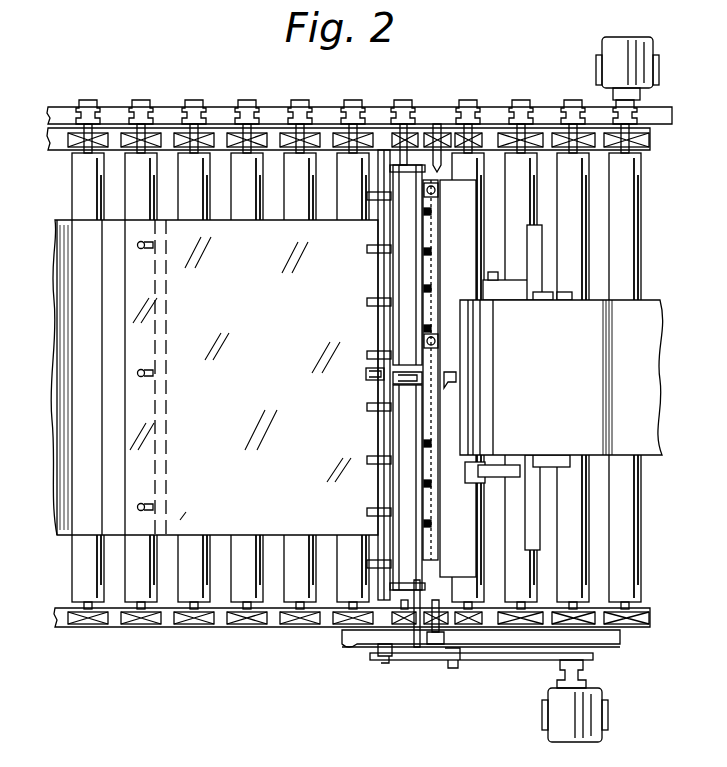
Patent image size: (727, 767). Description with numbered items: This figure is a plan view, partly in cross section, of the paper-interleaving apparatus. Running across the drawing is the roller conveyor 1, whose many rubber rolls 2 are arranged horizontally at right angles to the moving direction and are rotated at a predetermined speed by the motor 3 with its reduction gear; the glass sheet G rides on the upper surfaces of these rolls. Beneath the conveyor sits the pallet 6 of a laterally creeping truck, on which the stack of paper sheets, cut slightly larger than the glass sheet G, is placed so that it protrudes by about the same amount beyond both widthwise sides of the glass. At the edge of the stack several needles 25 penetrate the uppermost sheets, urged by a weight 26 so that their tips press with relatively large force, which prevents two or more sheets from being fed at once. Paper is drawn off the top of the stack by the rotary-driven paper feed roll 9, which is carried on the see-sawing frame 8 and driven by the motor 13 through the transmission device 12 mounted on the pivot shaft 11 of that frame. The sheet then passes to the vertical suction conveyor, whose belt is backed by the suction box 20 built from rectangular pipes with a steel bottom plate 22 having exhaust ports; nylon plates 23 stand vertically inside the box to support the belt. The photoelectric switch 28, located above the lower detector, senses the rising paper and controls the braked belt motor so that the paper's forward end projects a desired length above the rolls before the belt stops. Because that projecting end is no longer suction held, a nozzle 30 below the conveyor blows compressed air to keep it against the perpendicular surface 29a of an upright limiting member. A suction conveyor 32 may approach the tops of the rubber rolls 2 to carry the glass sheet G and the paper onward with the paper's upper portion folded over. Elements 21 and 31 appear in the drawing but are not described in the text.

The roller conveyor 1 is at (270, 107).
The rubber rolls 2 is at (242, 205).
The motor 3 is at (612, 49).
The pallet 6 is at (57, 537).
The frame 8 is at (398, 644).
The paper feed roll 9 is at (366, 250).
The pivot shaft 11 is at (485, 659).
The transmission device 12 is at (558, 667).
The motor 13 is at (546, 718).
The suction box 20 is at (467, 300).
The bearing 21 is at (433, 190).
The steel bottom plate 22 is at (431, 262).
The nylon plates 23 is at (431, 214).
The needles 25 is at (140, 250).
The weight 26 is at (137, 245).
The photoelectric switch 28 is at (444, 417).
The perpendicular surface 29a is at (417, 648).
The nozzle 30 is at (418, 262).
The connector 31 is at (365, 374).
The suction conveyor 32 is at (545, 373).
The glass sheet G is at (237, 406).